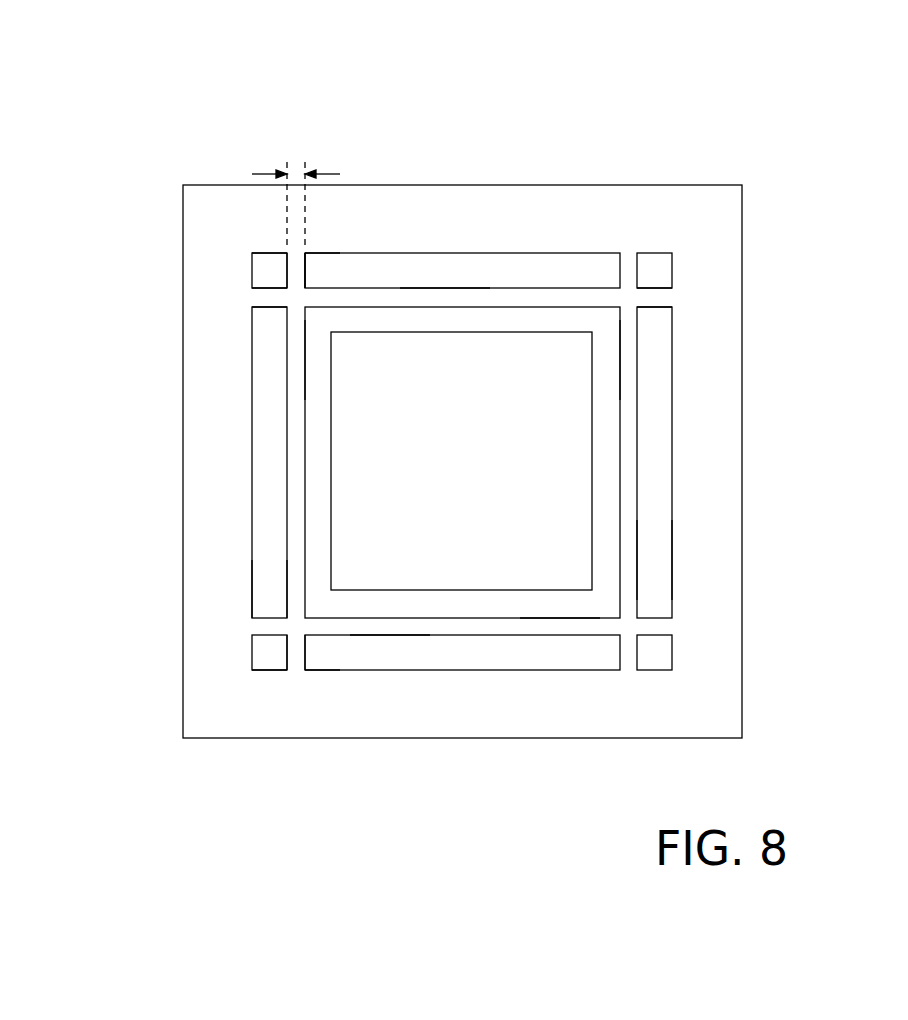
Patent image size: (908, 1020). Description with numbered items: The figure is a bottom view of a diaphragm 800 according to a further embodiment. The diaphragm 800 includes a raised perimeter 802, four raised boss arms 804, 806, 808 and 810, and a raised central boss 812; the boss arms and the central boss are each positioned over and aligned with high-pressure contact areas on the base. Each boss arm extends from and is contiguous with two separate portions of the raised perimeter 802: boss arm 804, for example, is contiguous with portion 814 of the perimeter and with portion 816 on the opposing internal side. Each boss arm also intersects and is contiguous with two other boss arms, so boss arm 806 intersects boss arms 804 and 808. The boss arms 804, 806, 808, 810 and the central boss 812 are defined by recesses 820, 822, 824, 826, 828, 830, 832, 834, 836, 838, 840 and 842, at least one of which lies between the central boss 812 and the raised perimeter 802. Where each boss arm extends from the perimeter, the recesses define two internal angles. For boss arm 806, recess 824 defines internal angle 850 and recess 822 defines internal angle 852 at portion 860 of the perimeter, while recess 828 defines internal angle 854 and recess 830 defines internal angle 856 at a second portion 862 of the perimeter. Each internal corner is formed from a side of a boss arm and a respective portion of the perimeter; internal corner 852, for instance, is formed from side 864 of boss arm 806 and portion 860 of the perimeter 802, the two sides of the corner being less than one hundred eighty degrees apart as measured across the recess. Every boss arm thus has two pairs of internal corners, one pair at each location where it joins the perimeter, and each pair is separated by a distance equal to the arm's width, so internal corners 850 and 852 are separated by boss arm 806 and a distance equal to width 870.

The diaphragm 800 is at (805, 142).
The raised perimeter 802 is at (733, 425).
The raised boss arm 804 is at (447, 297).
The raised boss arm 806 is at (295, 477).
The raised boss arm 808 is at (465, 625).
The raised boss arm 810 is at (630, 476).
The raised central boss 812 is at (483, 471).
The portion of raised perimeter 814 is at (672, 296).
The portion of raised perimeter 816 is at (260, 295).
The recess 820 is at (652, 273).
The recess 822 is at (445, 282).
The recess 824 is at (260, 268).
The recess 826 is at (262, 600).
The recess 828 is at (260, 662).
The recess 830 is at (392, 641).
The recess 832 is at (653, 650).
The recess 834 is at (657, 555).
The recess 836 is at (610, 360).
The recess 838 is at (520, 312).
The recess 840 is at (313, 352).
The recess 842 is at (560, 598).
The internal angle 850 is at (270, 255).
The internal angle 852 is at (305, 254).
The internal angle 854 is at (286, 669).
The internal angle 856 is at (306, 668).
The portion of raised perimeter 860 is at (297, 250).
The second portion of raised perimeter 862 is at (295, 673).
The side of boss arm 864 is at (305, 277).
The width of boss arm 870 is at (252, 174).